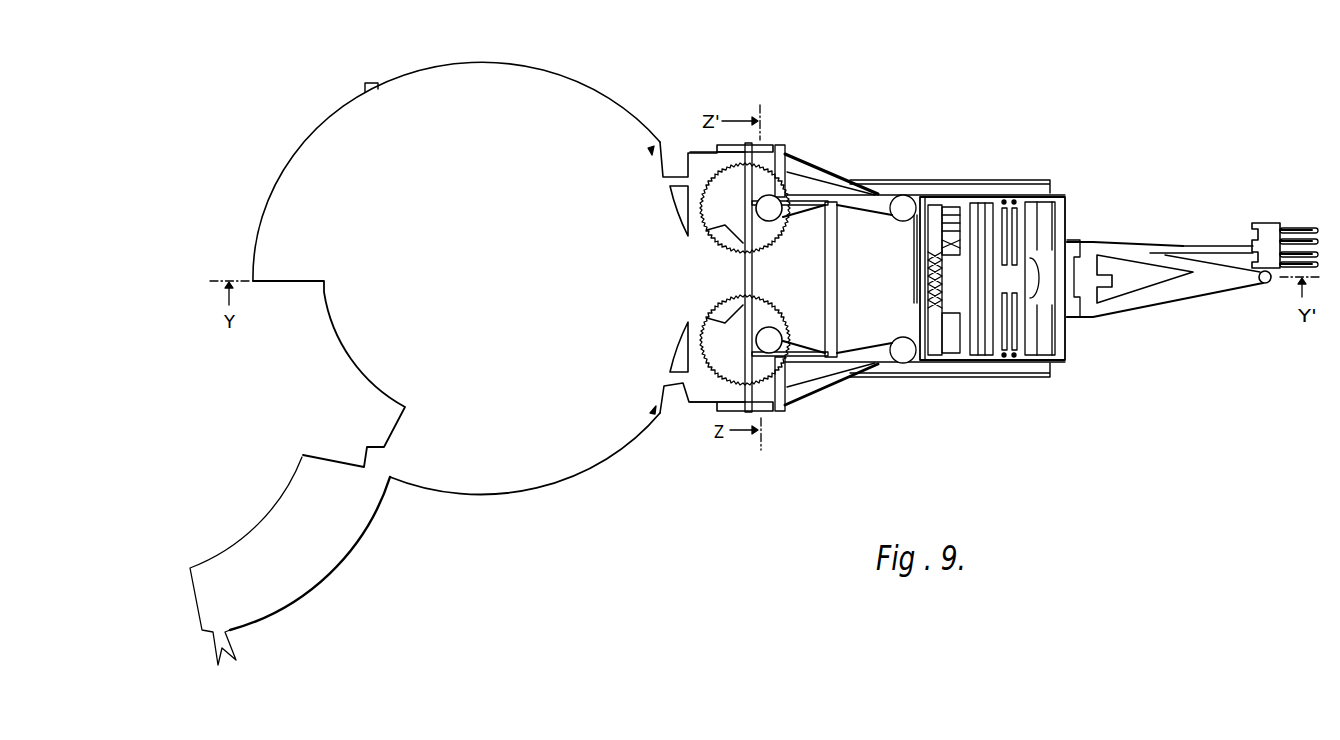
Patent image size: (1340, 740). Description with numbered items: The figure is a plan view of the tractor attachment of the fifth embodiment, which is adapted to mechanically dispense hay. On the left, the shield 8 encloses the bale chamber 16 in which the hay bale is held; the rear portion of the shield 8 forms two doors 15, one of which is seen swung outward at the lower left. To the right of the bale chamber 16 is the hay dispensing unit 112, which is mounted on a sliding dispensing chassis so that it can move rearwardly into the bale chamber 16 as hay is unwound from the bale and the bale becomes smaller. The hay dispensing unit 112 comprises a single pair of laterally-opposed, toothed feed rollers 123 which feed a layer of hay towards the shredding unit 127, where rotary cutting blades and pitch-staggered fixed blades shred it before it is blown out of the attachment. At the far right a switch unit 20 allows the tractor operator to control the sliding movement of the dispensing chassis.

The shield 8 is at (507, 497).
The doors 15 is at (326, 578).
The bale chamber 16 is at (613, 94).
The switch unit 20 is at (1268, 223).
The hay dispensing unit 112 is at (983, 173).
The toothed feed rollers 123 is at (803, 173).
The shredding unit 127 is at (948, 320).